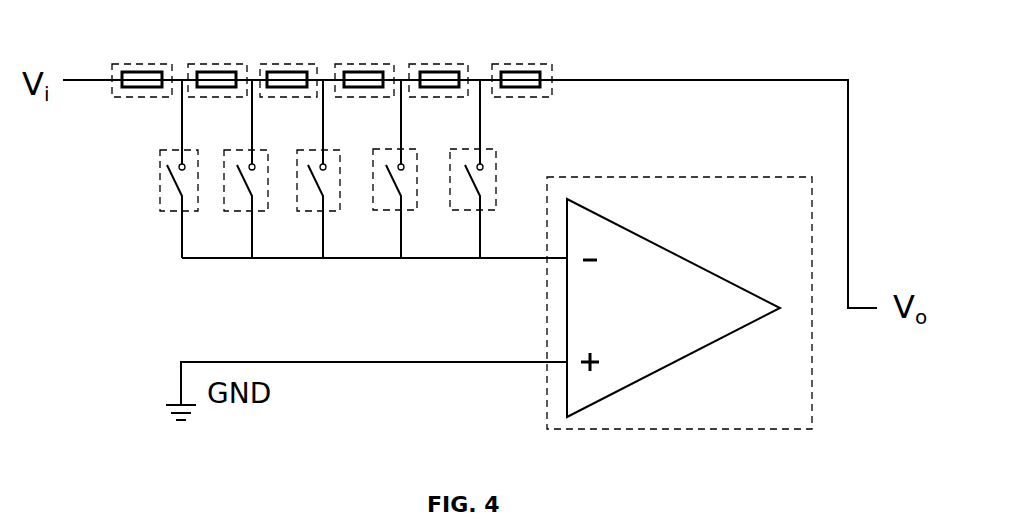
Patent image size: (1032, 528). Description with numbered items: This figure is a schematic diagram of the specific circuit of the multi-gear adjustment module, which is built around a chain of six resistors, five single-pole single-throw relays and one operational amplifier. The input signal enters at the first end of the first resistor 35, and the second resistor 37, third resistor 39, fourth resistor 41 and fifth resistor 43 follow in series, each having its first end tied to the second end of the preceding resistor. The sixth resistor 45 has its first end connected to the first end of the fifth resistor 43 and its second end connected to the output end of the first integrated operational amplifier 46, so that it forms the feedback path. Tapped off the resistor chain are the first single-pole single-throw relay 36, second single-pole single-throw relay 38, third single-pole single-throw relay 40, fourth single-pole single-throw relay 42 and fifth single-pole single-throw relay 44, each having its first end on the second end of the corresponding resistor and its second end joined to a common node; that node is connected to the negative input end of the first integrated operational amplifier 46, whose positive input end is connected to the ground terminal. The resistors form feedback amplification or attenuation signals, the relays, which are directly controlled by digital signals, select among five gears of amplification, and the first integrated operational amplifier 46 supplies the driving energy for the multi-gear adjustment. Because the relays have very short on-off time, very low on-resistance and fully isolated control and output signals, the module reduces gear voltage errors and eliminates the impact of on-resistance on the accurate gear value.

The first resistor 35 is at (117, 66).
The second resistor 37 is at (190, 66).
The third resistor 39 is at (263, 66).
The fourth resistor 41 is at (338, 66).
The fifth resistor 43 is at (416, 64).
The sixth resistor 45 is at (496, 64).
The first single-pole single-throw relay 36 is at (170, 150).
The second single-pole single-throw relay 38 is at (248, 147).
The third single-pole single-throw relay 40 is at (318, 146).
The fourth single-pole single-throw relay 42 is at (398, 148).
The fifth single-pole single-throw relay 44 is at (475, 148).
The first integrated operational amplifier 46 is at (657, 177).